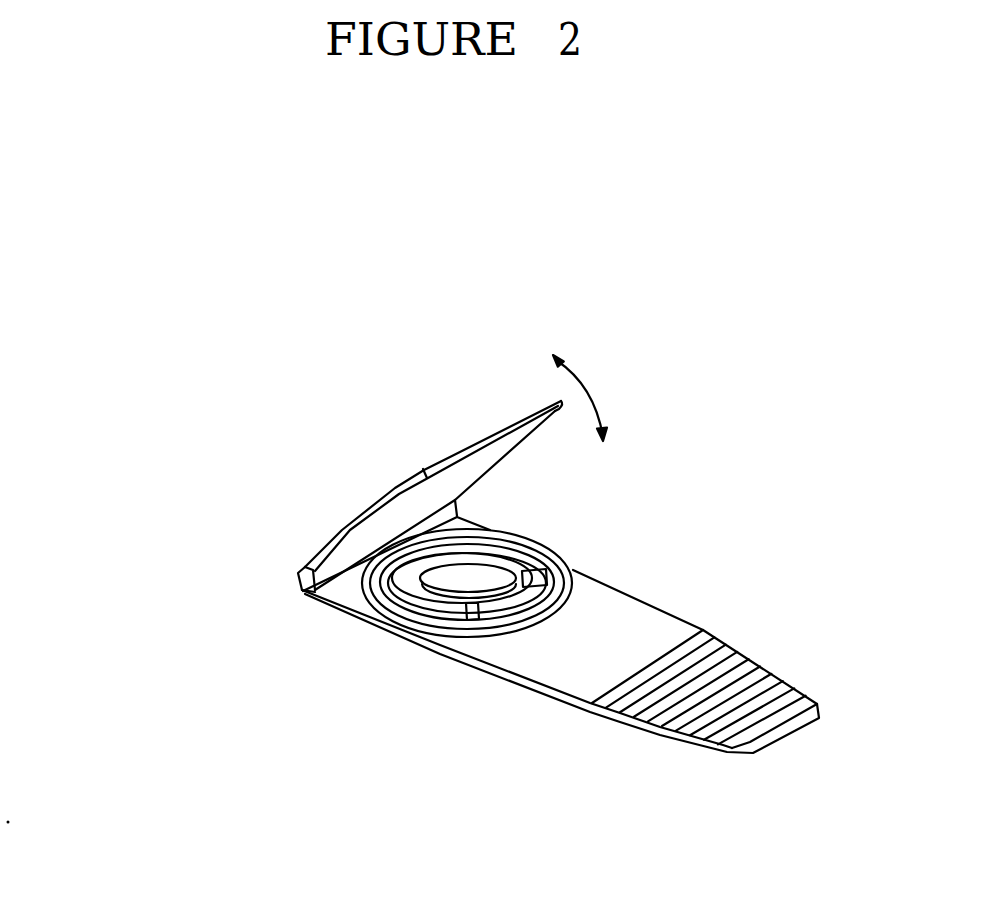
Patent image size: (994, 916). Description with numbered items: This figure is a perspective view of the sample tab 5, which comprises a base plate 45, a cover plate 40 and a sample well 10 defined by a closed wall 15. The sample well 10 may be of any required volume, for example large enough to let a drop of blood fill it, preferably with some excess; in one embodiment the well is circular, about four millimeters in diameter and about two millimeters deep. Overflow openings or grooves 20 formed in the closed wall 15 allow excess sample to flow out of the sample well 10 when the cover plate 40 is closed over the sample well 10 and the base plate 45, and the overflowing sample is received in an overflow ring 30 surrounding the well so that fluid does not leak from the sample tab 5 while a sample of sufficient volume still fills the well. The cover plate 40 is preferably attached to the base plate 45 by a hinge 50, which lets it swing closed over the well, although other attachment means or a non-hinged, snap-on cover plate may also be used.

The sample tab 5 is at (722, 548).
The sample well 10 is at (438, 583).
The closed wall 15 is at (510, 553).
The overflow openings or grooves 20 is at (457, 623).
The overflow ring 30 is at (362, 594).
The cover plate 40 is at (474, 430).
The base plate 45 is at (643, 636).
The hinge 50 is at (298, 576).